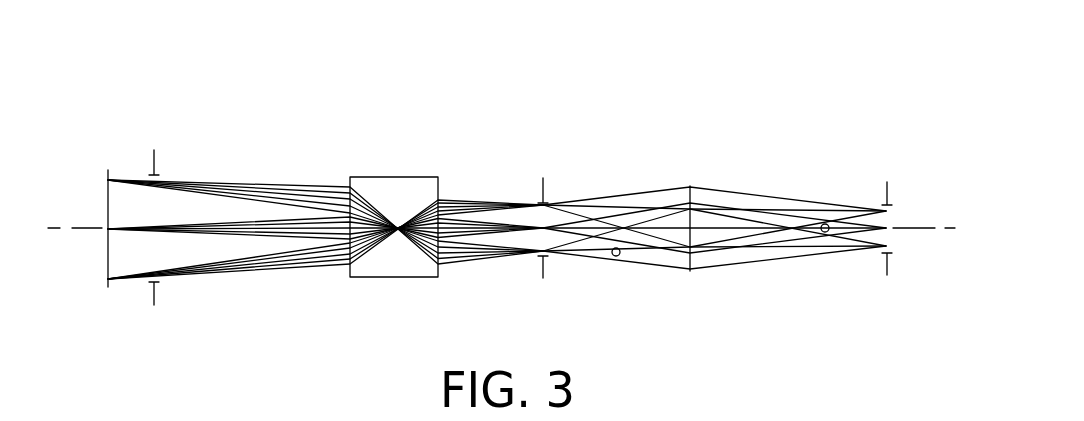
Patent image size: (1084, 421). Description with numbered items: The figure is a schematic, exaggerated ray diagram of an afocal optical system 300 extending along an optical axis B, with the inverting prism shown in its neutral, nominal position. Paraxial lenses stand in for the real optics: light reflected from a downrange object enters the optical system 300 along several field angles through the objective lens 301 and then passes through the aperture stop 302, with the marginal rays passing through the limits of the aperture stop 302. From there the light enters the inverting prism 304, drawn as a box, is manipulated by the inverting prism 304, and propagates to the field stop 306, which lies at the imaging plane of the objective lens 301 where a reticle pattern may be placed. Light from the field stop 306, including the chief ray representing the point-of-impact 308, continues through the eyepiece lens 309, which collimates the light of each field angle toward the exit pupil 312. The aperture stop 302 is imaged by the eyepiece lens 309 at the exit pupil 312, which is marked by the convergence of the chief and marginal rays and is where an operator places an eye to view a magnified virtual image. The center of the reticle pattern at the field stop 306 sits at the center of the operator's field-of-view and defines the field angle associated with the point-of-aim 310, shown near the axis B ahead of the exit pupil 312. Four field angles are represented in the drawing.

The optical system 300 is at (603, 80).
The objective lens 301 is at (102, 200).
The aperture stop 302 is at (163, 177).
The inverting prism 304 is at (387, 178).
The field stop 306 is at (556, 201).
The point-of-impact 308 is at (618, 256).
The eyepiece lens 309 is at (695, 192).
The point-of-aim 310 is at (826, 224).
The exit pupil 312 is at (894, 206).
The optical axis B is at (909, 228).